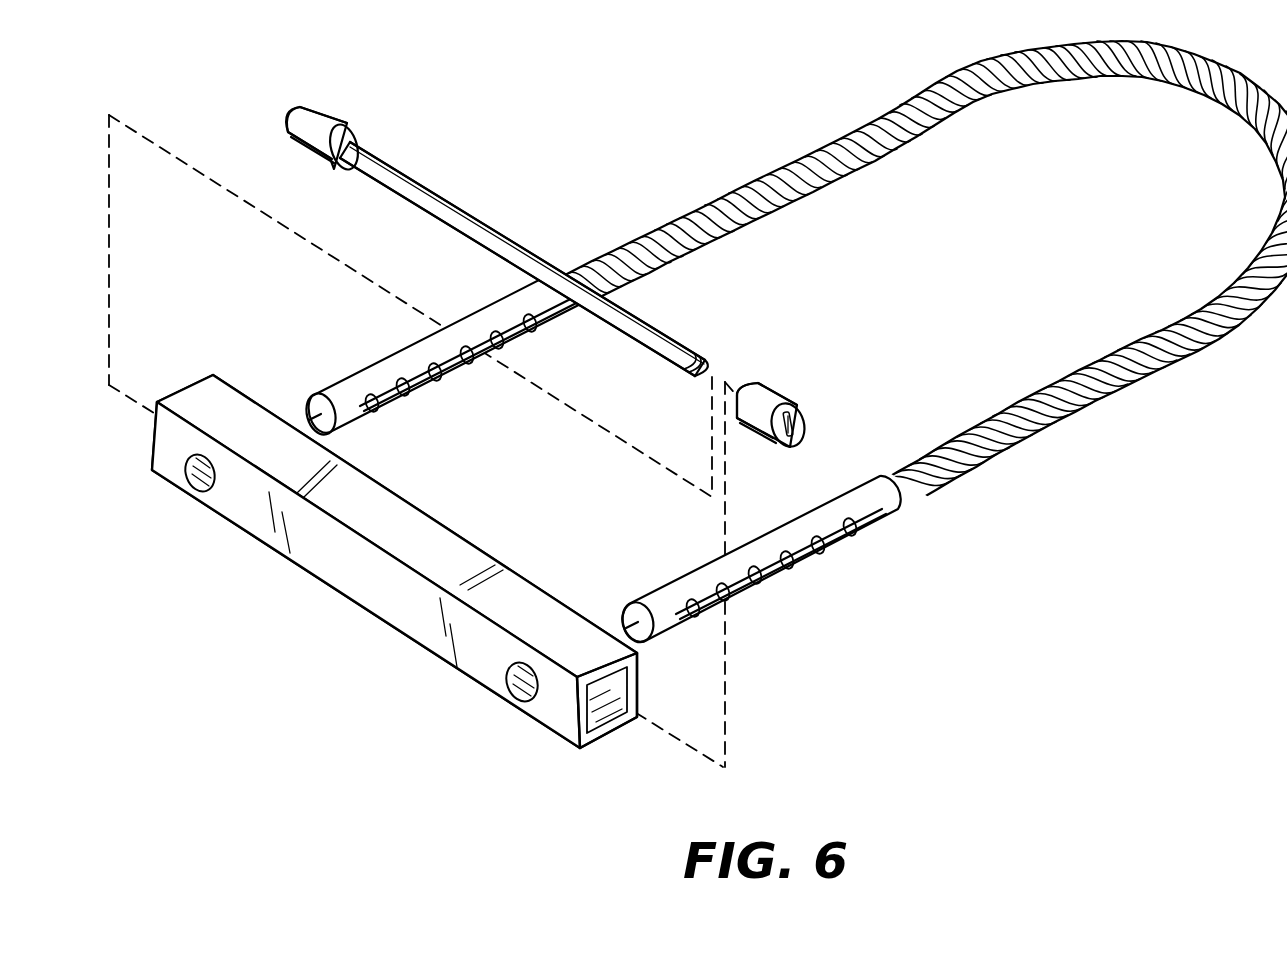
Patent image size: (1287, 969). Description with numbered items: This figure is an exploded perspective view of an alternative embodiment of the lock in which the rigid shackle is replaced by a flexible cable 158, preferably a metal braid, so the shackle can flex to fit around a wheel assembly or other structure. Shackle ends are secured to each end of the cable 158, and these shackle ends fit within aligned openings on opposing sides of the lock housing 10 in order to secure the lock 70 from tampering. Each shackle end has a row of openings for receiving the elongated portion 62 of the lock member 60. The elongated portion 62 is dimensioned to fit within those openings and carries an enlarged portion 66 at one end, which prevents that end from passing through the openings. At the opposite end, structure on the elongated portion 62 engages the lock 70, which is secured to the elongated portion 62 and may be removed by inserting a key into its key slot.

The lock housing 10 is at (394, 567).
The lock member 60 is at (497, 224).
The elongated portion 62 is at (428, 196).
The enlarged portion 66 is at (313, 110).
The lock 70 is at (775, 389).
The flexible cable 158 is at (1070, 416).